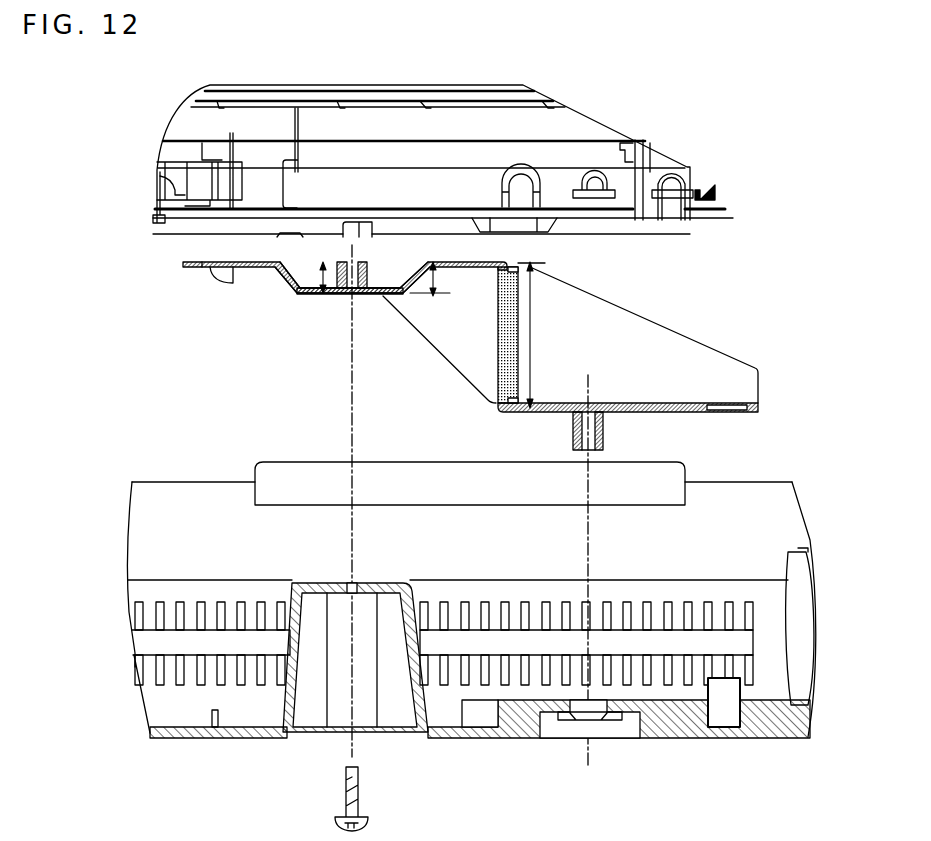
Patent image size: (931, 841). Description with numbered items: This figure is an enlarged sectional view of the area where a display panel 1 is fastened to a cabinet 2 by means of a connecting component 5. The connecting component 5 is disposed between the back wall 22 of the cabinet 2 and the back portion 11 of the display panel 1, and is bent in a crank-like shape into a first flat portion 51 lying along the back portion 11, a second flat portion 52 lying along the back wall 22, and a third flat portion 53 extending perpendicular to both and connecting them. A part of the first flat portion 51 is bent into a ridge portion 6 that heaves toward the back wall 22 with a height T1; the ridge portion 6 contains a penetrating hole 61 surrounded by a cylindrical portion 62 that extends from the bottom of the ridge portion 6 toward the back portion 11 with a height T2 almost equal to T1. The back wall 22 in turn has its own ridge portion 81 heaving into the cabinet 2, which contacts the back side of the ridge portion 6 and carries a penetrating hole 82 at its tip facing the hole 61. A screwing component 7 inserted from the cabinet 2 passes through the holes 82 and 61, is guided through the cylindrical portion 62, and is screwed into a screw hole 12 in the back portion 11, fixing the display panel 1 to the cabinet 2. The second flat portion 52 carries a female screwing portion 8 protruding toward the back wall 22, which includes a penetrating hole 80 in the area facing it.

The display panel 1 is at (393, 118).
The back portion 11 is at (258, 233).
The screw hole 12 is at (350, 229).
The connecting component 5 is at (711, 340).
The first flat portion 51 is at (232, 268).
The second flat portion 52 is at (700, 412).
The third flat portion 53 is at (500, 330).
The ridge portion 6 is at (308, 296).
The penetrating hole 61 is at (357, 294).
The cylindrical portion 62 is at (365, 281).
The female screwing portion 8 is at (605, 429).
The cabinet 2 is at (800, 503).
The back wall 22 is at (768, 729).
The penetrating hole 80 is at (607, 718).
The ridge portion 81 is at (414, 594).
The penetrating hole 82 is at (355, 583).
The screwing component 7 is at (358, 795).